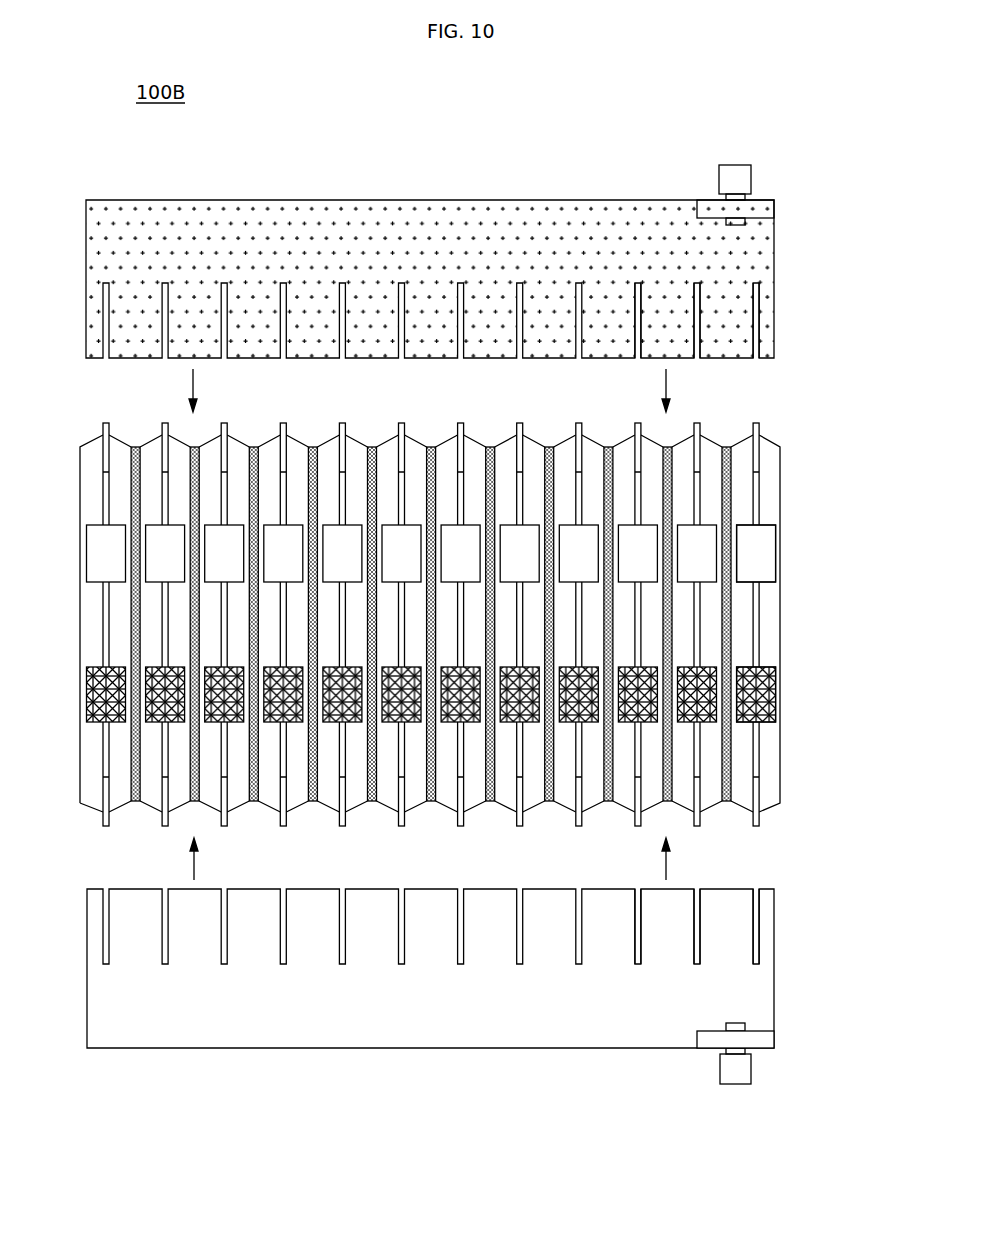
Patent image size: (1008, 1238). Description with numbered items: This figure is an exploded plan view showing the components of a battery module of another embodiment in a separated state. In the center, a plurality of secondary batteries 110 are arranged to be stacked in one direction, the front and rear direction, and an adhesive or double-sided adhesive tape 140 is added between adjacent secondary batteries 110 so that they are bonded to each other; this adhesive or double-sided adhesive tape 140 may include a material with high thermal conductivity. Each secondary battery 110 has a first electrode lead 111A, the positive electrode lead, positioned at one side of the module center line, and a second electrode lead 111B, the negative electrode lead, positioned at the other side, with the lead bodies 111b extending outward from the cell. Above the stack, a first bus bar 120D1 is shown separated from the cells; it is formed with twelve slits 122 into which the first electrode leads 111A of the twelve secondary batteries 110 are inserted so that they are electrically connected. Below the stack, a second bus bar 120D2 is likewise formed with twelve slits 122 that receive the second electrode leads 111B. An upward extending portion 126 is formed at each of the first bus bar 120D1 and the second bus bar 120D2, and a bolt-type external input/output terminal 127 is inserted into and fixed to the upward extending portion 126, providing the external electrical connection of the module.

The secondary battery 110 is at (794, 445).
The first electrode lead 111A is at (774, 557).
The second electrode lead 111B is at (774, 677).
The cell body 111b is at (766, 538).
The first bus bar 120D1 is at (571, 193).
The second bus bar 120D2 is at (513, 1062).
The slit 122 is at (634, 359).
The upward extending portion 126 is at (774, 211).
The external input/output terminal 127 is at (735, 165).
The adhesive or double-sided adhesive tape 140 is at (136, 446).